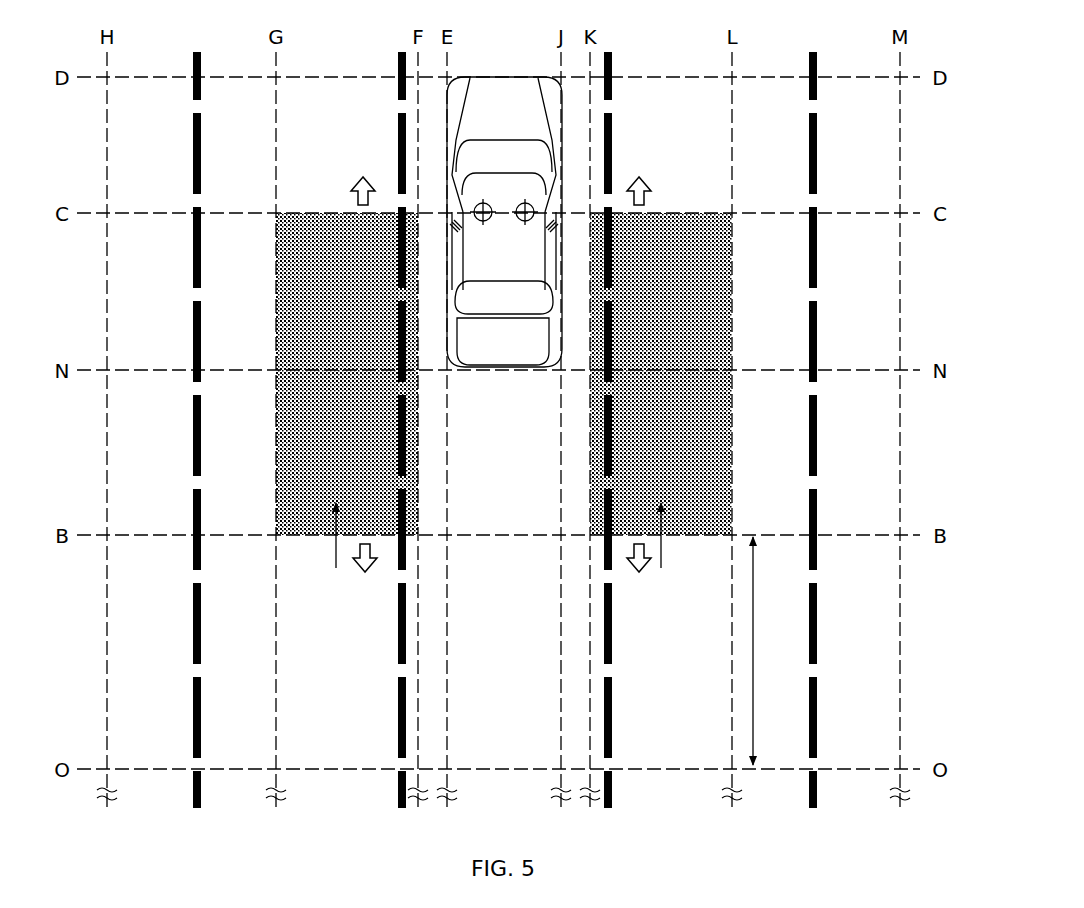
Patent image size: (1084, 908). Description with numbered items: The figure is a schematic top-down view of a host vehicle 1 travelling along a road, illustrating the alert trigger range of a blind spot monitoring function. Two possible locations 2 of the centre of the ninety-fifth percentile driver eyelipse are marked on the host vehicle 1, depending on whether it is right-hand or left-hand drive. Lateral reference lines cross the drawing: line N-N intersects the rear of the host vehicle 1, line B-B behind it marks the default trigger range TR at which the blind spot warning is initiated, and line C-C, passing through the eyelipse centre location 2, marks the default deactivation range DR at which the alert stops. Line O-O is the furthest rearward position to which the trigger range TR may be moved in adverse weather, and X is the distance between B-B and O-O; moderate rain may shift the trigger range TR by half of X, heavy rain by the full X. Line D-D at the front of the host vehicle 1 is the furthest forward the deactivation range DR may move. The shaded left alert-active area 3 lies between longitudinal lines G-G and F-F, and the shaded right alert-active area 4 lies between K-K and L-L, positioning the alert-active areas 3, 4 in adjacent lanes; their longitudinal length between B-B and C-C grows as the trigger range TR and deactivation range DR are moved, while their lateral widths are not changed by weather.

The host vehicle 1 is at (504, 222).
The eyelipse centre locations 2 is at (512, 206).
The left alert-active area 3 is at (335, 551).
The right alert-active area 4 is at (660, 551).
The deactivation range DR is at (305, 212).
The trigger range TR is at (305, 537).
The distance X is at (764, 651).